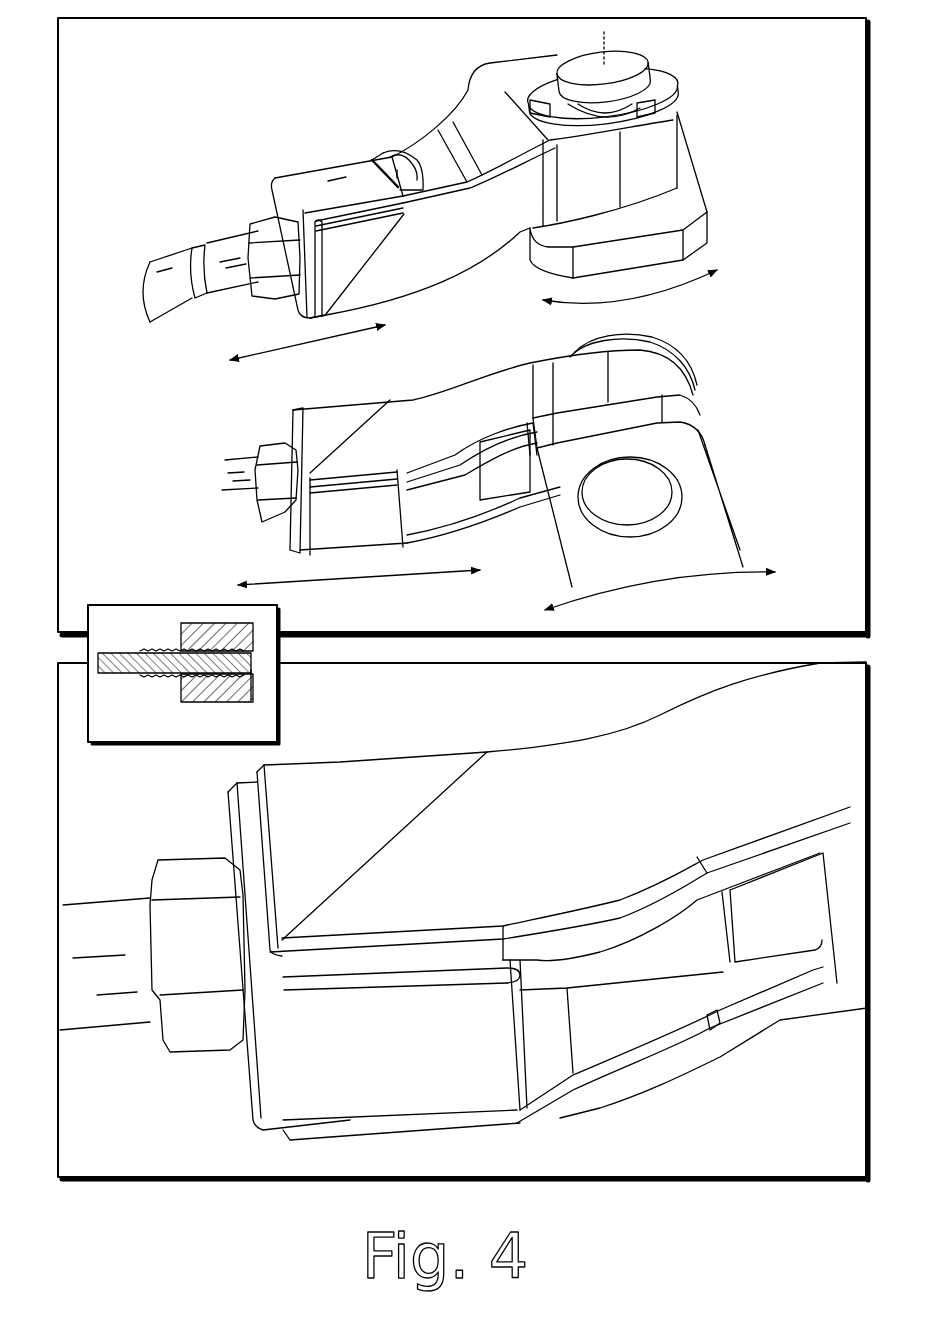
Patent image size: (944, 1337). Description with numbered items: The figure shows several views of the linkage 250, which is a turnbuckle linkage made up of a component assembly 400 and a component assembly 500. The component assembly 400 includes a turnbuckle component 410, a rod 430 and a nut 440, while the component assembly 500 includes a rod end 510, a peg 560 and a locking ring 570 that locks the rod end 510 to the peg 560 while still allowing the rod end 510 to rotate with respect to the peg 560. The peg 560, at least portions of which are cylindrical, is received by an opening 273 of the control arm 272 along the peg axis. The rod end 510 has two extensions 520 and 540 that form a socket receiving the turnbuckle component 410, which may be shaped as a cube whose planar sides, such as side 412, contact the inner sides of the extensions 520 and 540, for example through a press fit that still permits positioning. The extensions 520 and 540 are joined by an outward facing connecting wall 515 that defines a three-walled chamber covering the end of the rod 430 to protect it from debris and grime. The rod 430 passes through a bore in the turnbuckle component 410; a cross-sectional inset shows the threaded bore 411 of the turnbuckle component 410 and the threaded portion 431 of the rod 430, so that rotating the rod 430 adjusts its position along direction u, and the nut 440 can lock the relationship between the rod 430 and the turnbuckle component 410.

The linkage 250 is at (186, 96).
The component assembly 500 is at (340, 88).
The component assembly 400 is at (252, 196).
The connecting wall 515 is at (427, 160).
The peg 560 is at (637, 68).
The locking ring 570 is at (665, 93).
The control arm 272 is at (698, 190).
The opening 273 is at (660, 530).
The threaded portion 431 is at (160, 660).
The rod 430 is at (160, 672).
The turnbuckle component 410 is at (196, 700).
The threaded bore 411 is at (250, 700).
The extension 520 is at (410, 760).
The rod end 510 is at (568, 943).
The nut 440 is at (172, 880).
The side 412 is at (400, 1083).
The extension 540 is at (485, 1126).